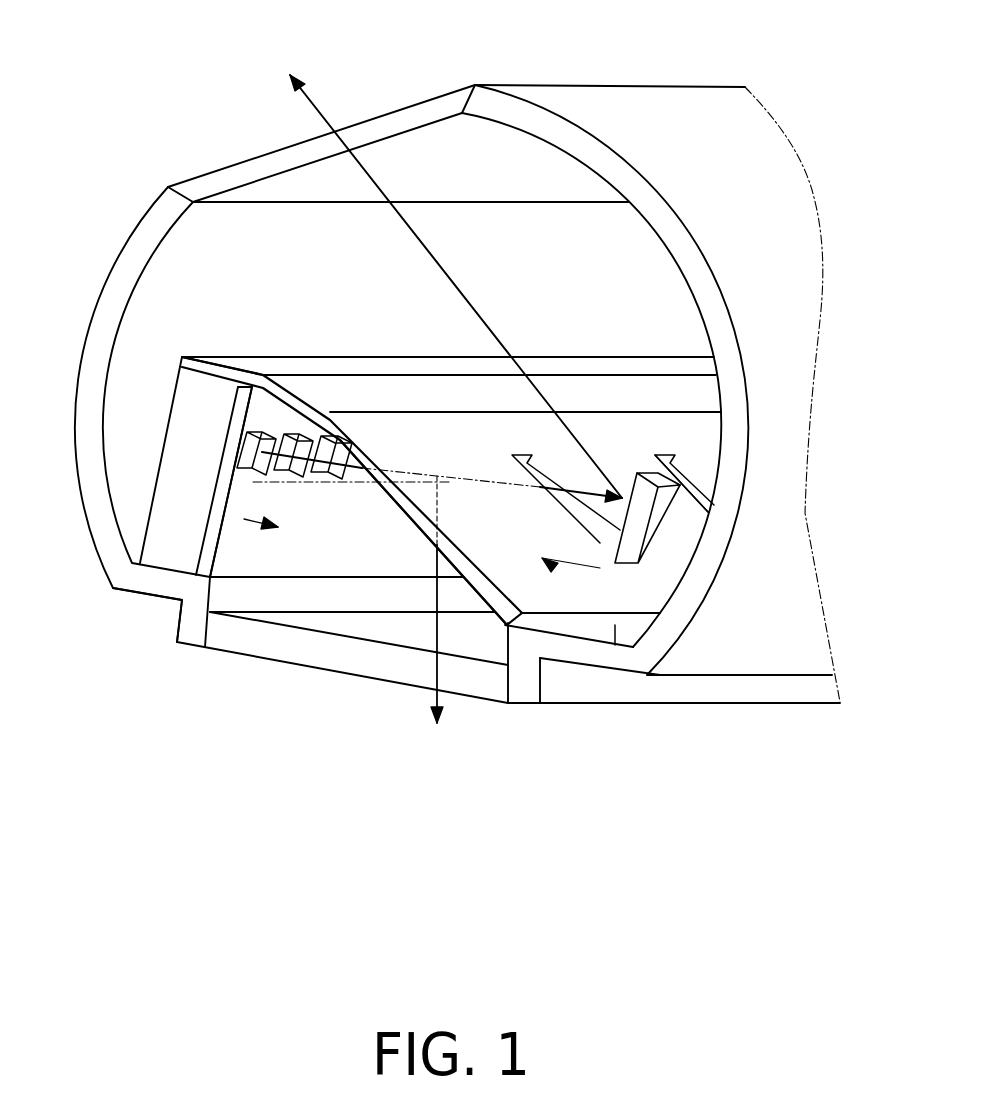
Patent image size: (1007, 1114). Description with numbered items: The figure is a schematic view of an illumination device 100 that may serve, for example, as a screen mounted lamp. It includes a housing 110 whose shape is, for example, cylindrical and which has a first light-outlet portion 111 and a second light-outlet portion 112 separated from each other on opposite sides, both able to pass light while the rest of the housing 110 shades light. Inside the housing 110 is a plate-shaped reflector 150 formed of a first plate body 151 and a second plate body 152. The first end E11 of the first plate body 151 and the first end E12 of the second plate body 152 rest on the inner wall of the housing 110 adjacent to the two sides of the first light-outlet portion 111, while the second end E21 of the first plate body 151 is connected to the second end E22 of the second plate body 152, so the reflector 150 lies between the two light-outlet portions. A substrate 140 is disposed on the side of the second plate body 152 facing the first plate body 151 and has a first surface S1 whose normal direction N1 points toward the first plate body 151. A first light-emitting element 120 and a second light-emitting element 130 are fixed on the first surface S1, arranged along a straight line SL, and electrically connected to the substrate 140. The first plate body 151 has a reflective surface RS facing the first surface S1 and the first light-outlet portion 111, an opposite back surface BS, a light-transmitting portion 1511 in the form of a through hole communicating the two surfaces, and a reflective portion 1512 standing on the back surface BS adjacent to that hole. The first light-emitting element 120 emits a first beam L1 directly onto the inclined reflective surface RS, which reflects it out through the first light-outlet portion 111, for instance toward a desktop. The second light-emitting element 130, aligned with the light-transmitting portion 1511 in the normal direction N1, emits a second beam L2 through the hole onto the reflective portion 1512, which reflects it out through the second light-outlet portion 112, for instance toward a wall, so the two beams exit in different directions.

The illumination device 100 is at (101, 41).
The housing 110 is at (780, 538).
The first light-outlet portion 111 is at (318, 653).
The second light-outlet portion 112 is at (258, 165).
The first light-emitting element 120 is at (253, 455).
The second light-emitting element 130 is at (255, 383).
The substrate 140 is at (206, 523).
The reflector 150 is at (483, 590).
The first plate body 151 is at (678, 437).
The light-transmitting portion 1511 is at (680, 464).
The reflective portion 1512 is at (647, 523).
The second plate body 152 is at (197, 413).
The first end of the first plate body E11 is at (583, 630).
The first end of the second plate body E12 is at (143, 602).
The second end of the first plate body E21 is at (302, 374).
The second end of the second plate body E22 is at (242, 368).
The first surface S1 is at (213, 556).
The normal direction N1 is at (244, 519).
The straight line SL is at (253, 482).
The reflective surface RS is at (415, 525).
The first beam L1 is at (401, 612).
The second beam L2 is at (323, 113).
The back surface BS is at (600, 568).